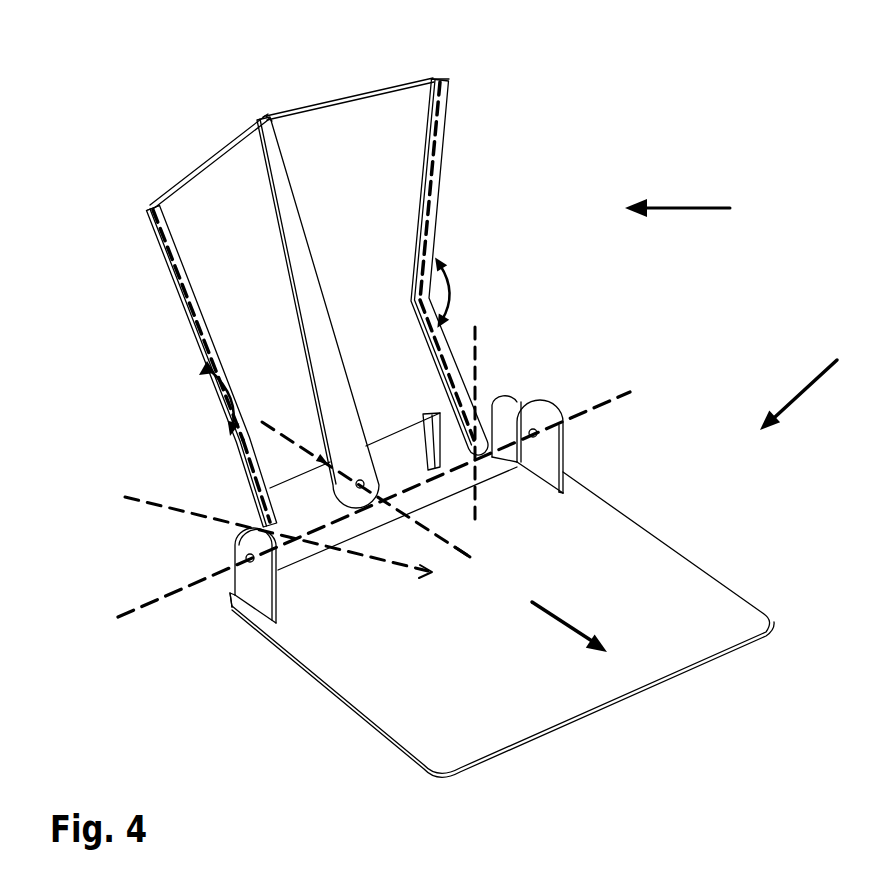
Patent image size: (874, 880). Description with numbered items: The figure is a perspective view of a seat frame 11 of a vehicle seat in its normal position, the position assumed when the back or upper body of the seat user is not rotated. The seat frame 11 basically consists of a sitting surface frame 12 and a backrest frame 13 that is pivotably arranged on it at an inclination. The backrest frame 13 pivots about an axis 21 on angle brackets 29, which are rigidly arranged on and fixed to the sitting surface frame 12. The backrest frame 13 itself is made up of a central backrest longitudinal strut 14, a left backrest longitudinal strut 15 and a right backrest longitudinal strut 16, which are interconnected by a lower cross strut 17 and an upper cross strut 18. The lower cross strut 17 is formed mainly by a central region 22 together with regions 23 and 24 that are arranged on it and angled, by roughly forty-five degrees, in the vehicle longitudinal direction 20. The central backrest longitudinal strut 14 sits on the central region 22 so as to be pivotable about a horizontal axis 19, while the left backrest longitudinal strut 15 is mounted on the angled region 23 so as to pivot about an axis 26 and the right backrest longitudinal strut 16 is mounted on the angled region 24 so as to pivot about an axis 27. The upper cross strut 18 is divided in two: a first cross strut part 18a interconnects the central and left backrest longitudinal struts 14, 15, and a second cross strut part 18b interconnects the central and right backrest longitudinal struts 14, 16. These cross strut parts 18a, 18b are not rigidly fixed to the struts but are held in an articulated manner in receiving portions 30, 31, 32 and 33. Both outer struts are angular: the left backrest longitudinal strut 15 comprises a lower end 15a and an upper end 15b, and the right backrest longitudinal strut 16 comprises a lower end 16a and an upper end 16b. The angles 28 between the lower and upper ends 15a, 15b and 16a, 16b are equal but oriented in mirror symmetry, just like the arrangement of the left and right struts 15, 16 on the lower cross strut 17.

The seat frame 11 is at (813, 385).
The sitting surface frame 12 is at (647, 565).
The backrest frame 13 is at (696, 210).
The central backrest longitudinal strut 14 is at (297, 248).
The left backrest longitudinal strut 15 is at (490, 267).
The lower end of left backrest longitudinal strut 15a is at (440, 347).
The upper end of left backrest longitudinal strut 15b is at (437, 170).
The right backrest longitudinal strut 16 is at (167, 367).
The lower end of right backrest longitudinal strut 16a is at (248, 455).
The upper end of right backrest longitudinal strut 16b is at (185, 292).
The lower cross strut 17 is at (360, 491).
The upper cross strut 18 is at (287, 118).
The first cross strut part 18a is at (345, 97).
The second cross strut part 18b is at (193, 168).
The horizontal axis 19 is at (470, 558).
The vehicle longitudinal direction 20 is at (569, 621).
The axis 21 is at (622, 393).
The central region 22 is at (393, 443).
The angled region 23 is at (497, 412).
The angled region 24 is at (243, 520).
The axis 26 is at (477, 367).
The axis 27 is at (133, 500).
The angle 28 is at (207, 400).
The angle bracket 29 is at (565, 466).
The receiving portion 30 is at (432, 78).
The receiving portion 31 is at (275, 118).
The receiving portion 32 is at (265, 122).
The receiving portion 33 is at (150, 205).